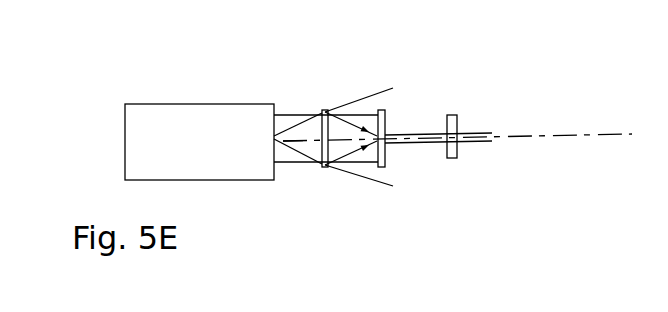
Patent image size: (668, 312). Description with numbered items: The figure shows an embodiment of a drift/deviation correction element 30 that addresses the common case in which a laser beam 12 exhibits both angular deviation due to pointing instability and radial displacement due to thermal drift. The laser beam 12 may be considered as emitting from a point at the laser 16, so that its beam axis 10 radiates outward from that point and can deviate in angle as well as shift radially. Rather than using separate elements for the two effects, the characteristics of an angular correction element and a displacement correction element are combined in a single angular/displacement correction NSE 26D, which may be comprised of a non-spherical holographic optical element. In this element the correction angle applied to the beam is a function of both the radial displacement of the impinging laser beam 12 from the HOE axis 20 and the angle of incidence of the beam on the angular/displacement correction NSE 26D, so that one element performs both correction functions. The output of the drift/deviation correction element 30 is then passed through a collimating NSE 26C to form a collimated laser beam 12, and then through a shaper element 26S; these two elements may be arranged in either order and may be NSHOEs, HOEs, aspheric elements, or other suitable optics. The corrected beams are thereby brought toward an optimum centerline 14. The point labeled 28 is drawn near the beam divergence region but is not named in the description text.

The beam axis 10 is at (408, 101).
The laser beam 12 is at (357, 100).
The optimum centerline 14 is at (557, 136).
The laser 16 is at (206, 155).
The HOE axis 20 is at (300, 136).
The beam divergence point 28 is at (299, 138).
The drift/deviation correction element 30 is at (396, 126).
The collimating NSE 26C is at (388, 110).
The angular/displacement correction NSE 26D is at (323, 170).
The shaper element 26S is at (462, 160).